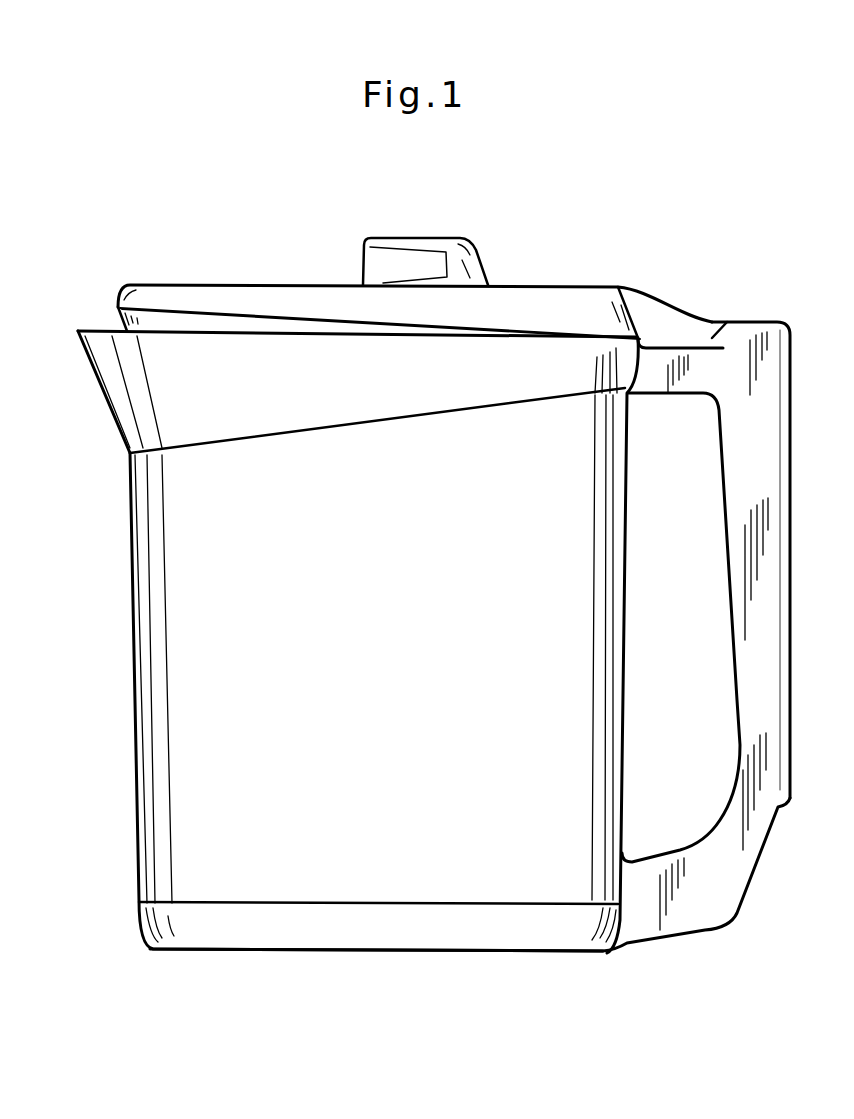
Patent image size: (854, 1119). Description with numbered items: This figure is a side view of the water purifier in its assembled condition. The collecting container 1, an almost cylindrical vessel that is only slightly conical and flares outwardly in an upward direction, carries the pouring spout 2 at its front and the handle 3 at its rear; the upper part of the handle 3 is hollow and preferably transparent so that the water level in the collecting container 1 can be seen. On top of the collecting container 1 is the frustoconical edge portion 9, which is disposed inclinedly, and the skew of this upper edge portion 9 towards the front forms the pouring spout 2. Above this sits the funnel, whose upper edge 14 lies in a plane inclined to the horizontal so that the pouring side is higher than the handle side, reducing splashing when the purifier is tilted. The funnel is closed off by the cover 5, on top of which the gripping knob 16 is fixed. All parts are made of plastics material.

The collecting container 1 is at (490, 935).
The pouring spout 2 is at (78, 343).
The handle 3 is at (767, 490).
The cover 5 is at (592, 302).
The frustoconical edge portion 9 is at (219, 395).
The upper edge of the funnel 14 is at (183, 312).
The gripping knob 16 is at (460, 247).